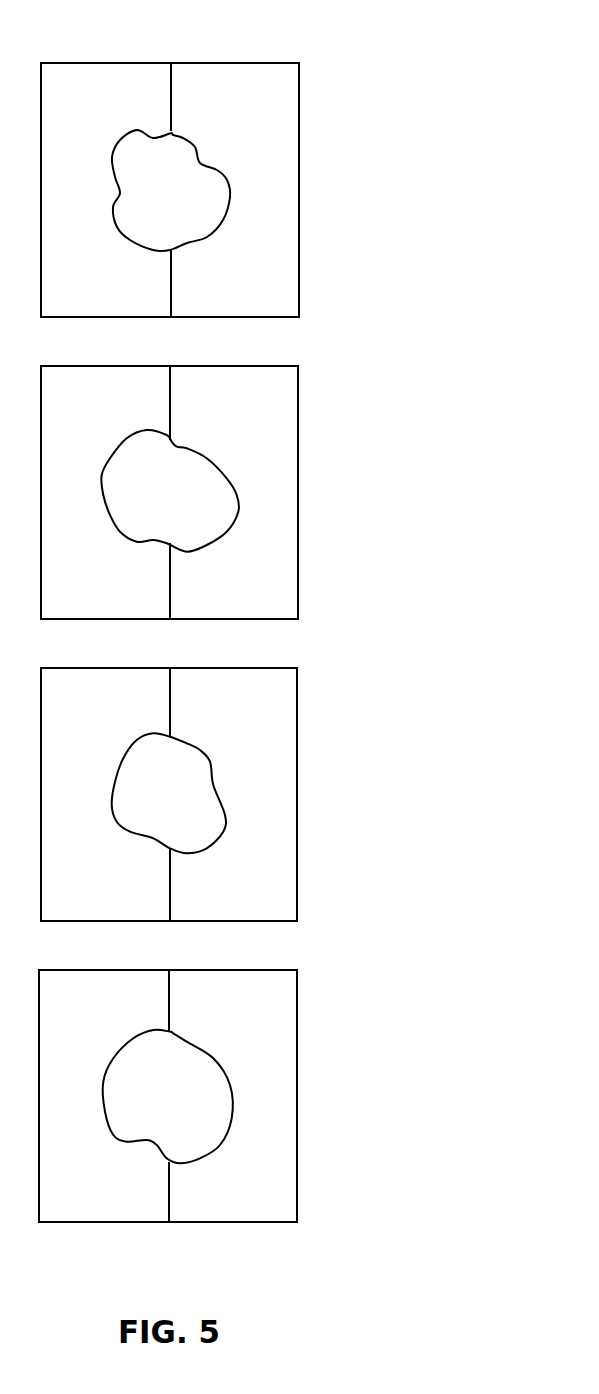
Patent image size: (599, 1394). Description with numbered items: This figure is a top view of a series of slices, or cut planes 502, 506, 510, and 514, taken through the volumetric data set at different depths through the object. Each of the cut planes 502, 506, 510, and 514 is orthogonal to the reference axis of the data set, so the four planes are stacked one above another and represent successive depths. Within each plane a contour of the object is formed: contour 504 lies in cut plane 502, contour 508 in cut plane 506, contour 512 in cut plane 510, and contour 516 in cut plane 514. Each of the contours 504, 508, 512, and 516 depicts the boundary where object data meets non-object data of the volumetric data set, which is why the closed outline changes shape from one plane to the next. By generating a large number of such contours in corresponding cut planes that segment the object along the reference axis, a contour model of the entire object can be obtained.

The cut plane 502 is at (213, 63).
The contour 504 is at (195, 239).
The cut plane 506 is at (213, 366).
The contour 508 is at (198, 552).
The cut plane 510 is at (213, 668).
The contour 512 is at (195, 854).
The cut plane 514 is at (213, 970).
The contour 516 is at (195, 1163).